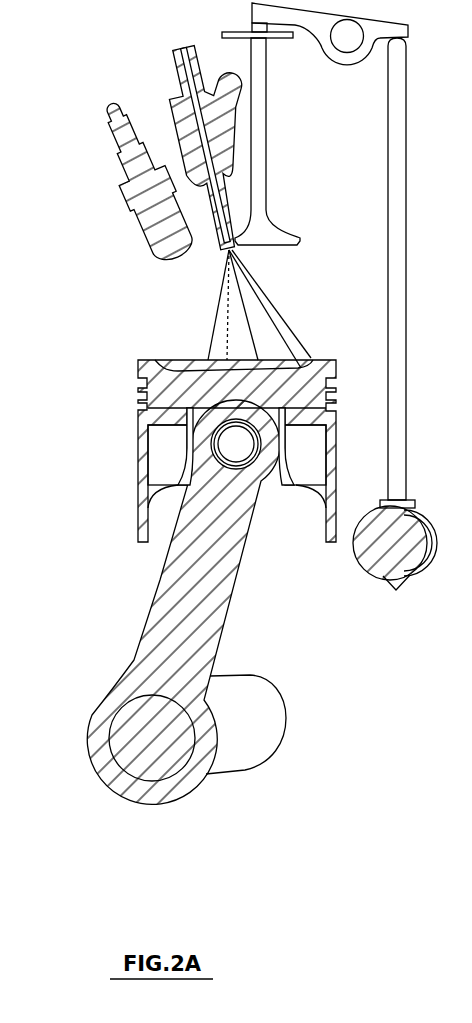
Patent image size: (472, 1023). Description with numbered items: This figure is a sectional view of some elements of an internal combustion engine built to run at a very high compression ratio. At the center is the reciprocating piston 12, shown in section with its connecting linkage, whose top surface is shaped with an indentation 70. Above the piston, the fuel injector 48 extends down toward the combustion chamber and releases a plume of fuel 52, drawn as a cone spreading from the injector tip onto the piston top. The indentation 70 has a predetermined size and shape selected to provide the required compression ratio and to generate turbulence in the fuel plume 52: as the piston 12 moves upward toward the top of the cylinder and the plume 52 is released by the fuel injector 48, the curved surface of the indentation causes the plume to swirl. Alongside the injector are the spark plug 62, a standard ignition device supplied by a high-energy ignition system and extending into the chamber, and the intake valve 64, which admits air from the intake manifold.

The piston 12 is at (163, 388).
The fuel injector 48 is at (185, 110).
The fuel plume 52 is at (238, 327).
The spark plug 62 is at (137, 160).
The intake valve 64 is at (258, 157).
The indentation 70 is at (178, 363).